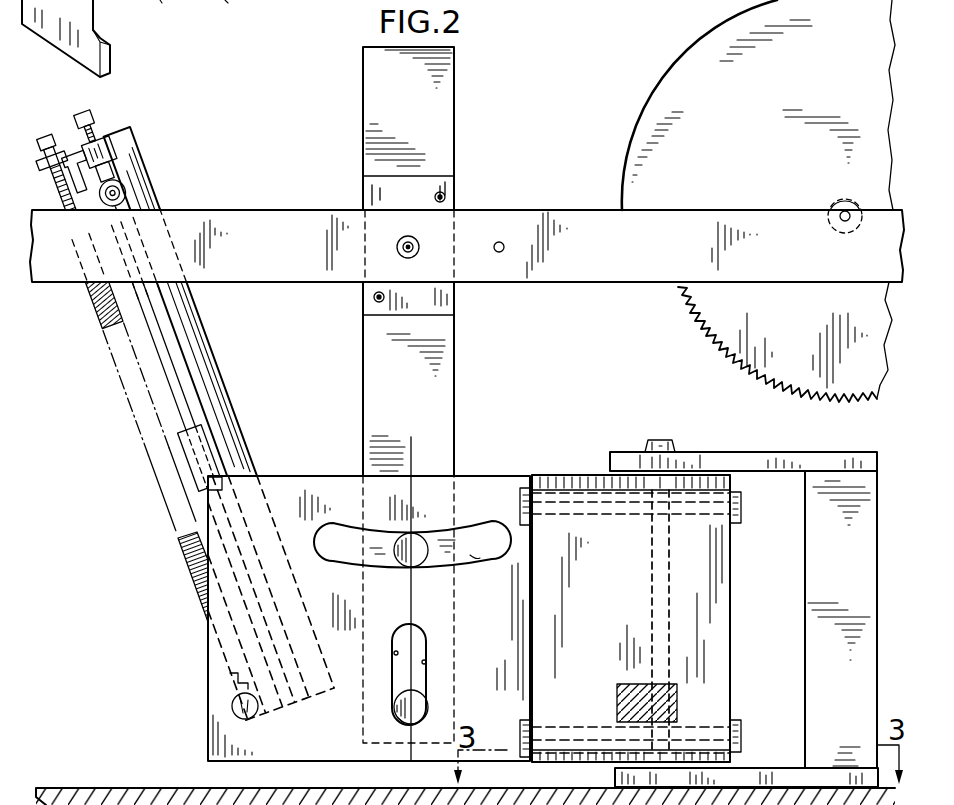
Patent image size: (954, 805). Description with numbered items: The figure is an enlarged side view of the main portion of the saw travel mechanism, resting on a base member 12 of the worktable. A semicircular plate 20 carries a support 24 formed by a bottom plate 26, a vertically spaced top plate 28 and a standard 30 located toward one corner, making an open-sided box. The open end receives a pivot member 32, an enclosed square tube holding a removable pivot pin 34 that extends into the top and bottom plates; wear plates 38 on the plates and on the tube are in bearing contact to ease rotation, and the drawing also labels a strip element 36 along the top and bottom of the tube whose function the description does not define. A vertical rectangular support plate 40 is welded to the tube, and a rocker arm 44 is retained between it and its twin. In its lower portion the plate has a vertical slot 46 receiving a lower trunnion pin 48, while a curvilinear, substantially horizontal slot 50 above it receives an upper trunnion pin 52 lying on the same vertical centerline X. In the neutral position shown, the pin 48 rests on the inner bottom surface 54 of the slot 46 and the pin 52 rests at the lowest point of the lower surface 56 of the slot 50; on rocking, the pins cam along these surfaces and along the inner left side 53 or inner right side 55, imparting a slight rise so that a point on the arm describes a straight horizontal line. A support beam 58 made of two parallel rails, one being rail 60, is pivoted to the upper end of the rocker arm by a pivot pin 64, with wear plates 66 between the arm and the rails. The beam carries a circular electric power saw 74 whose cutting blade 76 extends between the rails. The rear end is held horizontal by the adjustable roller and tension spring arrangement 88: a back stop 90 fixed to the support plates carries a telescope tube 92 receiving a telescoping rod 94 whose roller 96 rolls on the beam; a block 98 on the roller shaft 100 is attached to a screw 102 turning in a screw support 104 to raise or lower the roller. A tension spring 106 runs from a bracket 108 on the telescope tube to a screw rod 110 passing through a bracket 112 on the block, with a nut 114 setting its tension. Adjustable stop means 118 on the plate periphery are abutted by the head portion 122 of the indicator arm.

The base member 12 is at (100, 19).
The semicircular plate 20 is at (521, 794).
The support 24 is at (757, 449).
The bottom plate 26 is at (817, 767).
The top plate 28 is at (710, 462).
The standard 30 is at (817, 560).
The pivot member 32 is at (713, 602).
The pivot pin 34 is at (662, 446).
The friction strip 36 is at (560, 477).
The wear plate 38 is at (623, 470).
The support plate 40 is at (300, 481).
The rocker arm 44 is at (375, 382).
The vertical slot 46 is at (418, 640).
The trunnion pin 48 is at (415, 707).
The curvilinear slot 50 is at (487, 524).
The trunnion pin 52 is at (415, 556).
The inner left side 53 is at (396, 653).
The inner bottom surface 54 is at (400, 718).
The inner right side 55 is at (424, 662).
The lower surface 56 is at (468, 558).
The support beam 58 is at (512, 202).
The rail 60 is at (258, 222).
The pivot pin 64 is at (420, 249).
The wear plate 66 is at (368, 200).
The circular electric power saw 74 is at (662, 57).
The cutting blade 76 is at (777, 385).
The adjustable roller and tension spring arrangement 88 is at (182, 143).
The back stop 90 is at (137, 152).
The telescope tube 92 is at (192, 460).
The telescoping rod 94 is at (160, 338).
The roller 96 is at (122, 192).
The block 98 is at (112, 174).
The shaft 100 is at (125, 199).
The screw 102 is at (93, 120).
The screw support 104 is at (128, 133).
The tension spring 106 is at (97, 320).
The bracket 108 is at (267, 720).
The screw rod 110 is at (53, 130).
The bracket 112 is at (46, 172).
The nut 114 is at (40, 163).
The adjustable stop means 118 is at (243, 5).
The head portion 122 is at (178, 11).
The vertical centerline X is at (412, 455).